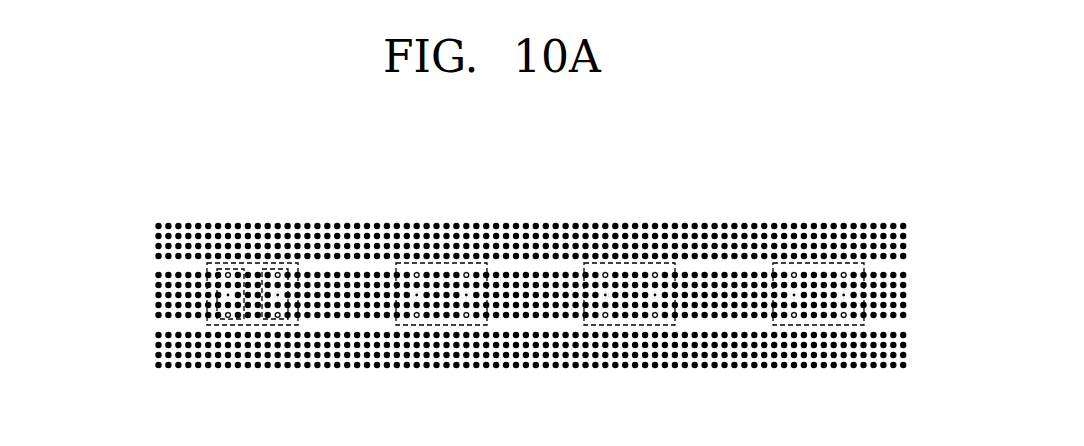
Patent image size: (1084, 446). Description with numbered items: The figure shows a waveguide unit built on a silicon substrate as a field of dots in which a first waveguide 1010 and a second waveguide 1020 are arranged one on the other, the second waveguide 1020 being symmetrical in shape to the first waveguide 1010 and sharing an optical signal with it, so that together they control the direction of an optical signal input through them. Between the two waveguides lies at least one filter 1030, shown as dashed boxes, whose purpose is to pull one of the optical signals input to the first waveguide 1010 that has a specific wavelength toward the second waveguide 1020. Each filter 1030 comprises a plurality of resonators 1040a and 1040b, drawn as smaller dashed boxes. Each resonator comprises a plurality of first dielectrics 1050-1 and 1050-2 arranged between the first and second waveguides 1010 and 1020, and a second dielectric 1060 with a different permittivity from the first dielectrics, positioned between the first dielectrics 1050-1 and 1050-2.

The first waveguide 1010 is at (157, 263).
The second waveguide 1020 is at (157, 322).
The filter 1030 is at (297, 263).
The resonator 1040a is at (230, 268).
The resonator 1040b is at (275, 268).
The first dielectric 1050-1 is at (417, 272).
The first dielectric 1050-2 is at (417, 318).
The second dielectric 1060 is at (421, 291).